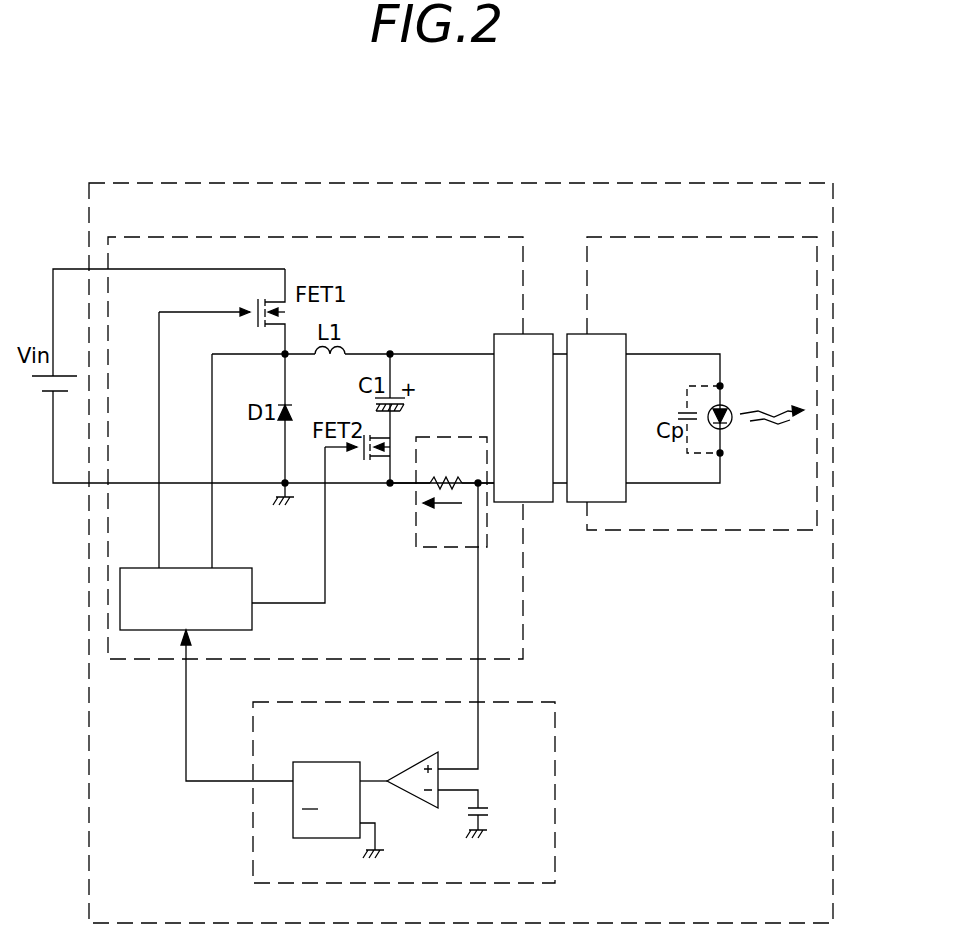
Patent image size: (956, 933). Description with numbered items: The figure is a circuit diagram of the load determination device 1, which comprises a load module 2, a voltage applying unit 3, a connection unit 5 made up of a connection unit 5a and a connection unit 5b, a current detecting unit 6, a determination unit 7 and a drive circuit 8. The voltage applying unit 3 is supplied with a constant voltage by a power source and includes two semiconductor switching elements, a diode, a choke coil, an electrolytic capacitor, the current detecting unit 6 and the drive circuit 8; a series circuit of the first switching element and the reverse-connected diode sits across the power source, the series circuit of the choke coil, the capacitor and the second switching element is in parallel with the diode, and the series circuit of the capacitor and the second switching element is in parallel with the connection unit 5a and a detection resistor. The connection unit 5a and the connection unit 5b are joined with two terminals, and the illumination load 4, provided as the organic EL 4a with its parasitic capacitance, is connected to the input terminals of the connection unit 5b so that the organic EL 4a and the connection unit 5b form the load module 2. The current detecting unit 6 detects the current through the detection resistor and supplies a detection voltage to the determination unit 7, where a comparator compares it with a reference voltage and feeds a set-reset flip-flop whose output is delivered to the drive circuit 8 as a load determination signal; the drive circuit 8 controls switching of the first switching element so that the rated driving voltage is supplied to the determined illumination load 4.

The load determination device 1 is at (512, 183).
The load module 2 is at (750, 237).
The voltage applying unit 3 is at (487, 237).
The illumination load 4 is at (748, 370).
The organic EL 4a is at (731, 424).
The connection unit 5 is at (560, 478).
The connection unit 5a is at (538, 502).
The connection unit 5b is at (598, 502).
The current detecting unit 6 is at (452, 437).
The determination unit 7 is at (555, 737).
The drive circuit 8 is at (238, 568).